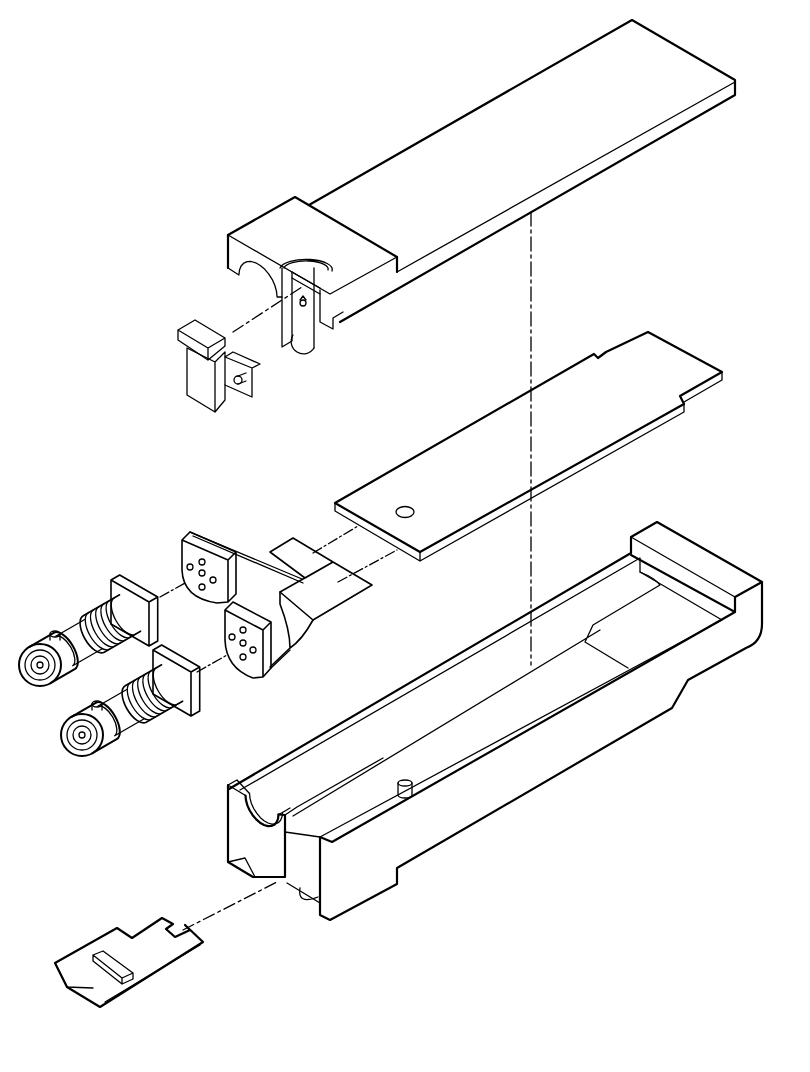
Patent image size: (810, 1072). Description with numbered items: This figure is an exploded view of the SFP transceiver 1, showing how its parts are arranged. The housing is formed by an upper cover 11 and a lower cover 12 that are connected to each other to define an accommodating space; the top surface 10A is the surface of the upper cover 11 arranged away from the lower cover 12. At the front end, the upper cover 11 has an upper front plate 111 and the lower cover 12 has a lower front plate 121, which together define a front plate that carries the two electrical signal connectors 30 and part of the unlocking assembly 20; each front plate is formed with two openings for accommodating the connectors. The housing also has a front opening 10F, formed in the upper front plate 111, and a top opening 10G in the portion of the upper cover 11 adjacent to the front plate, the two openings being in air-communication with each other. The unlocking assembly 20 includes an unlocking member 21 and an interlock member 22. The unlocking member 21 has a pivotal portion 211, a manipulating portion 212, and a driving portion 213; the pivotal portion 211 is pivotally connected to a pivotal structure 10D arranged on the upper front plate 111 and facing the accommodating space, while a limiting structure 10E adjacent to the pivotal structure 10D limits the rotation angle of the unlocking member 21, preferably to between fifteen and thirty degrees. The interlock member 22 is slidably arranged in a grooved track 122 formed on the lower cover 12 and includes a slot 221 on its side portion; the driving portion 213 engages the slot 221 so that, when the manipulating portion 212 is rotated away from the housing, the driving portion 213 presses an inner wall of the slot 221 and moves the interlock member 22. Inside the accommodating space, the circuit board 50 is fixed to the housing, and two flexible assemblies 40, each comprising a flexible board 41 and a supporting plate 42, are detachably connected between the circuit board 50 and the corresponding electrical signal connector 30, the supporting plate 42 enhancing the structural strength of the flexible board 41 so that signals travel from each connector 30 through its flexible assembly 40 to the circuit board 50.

The SFP transceiver 1 is at (181, 25).
The top surface 10A is at (275, 223).
The pivotal structure 10D is at (337, 325).
The limiting structure 10E is at (300, 312).
The front opening 10F is at (297, 290).
The top opening 10G is at (310, 267).
The upper cover 11 is at (437, 137).
The upper front plate 111 is at (230, 250).
The lower cover 12 is at (526, 772).
The lower front plate 121 is at (235, 828).
The track 122 is at (275, 890).
The unlocking assembly 20 is at (108, 86).
The unlocking member 21 is at (176, 365).
The pivotal portion 211 is at (243, 382).
The manipulating portion 212 is at (180, 328).
The driving portion 213 is at (200, 395).
The interlock member 22 is at (187, 1003).
The slot 221 is at (113, 960).
The electrical signal connectors 30 is at (84, 623).
The flexible assemblies 40 is at (185, 525).
The flexible board 41 is at (335, 596).
The supporting plate 42 is at (254, 665).
The circuit board 50 is at (487, 435).